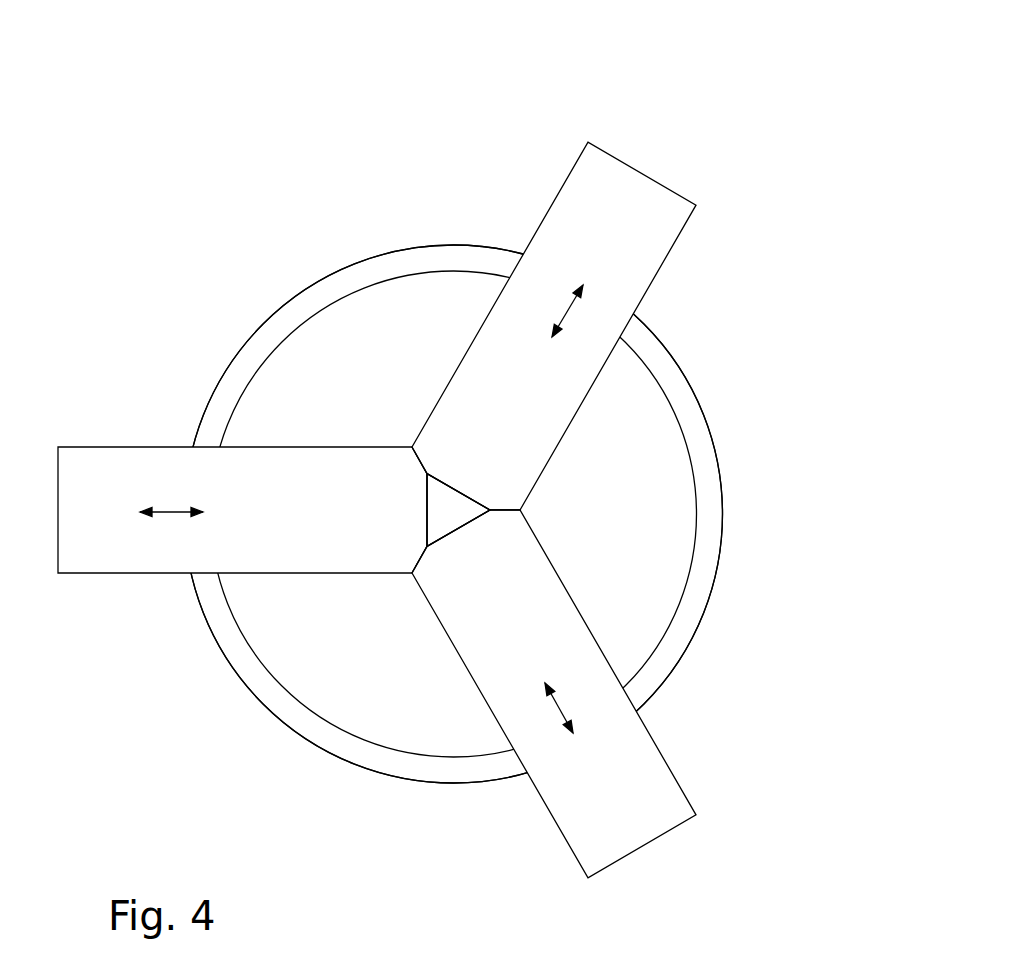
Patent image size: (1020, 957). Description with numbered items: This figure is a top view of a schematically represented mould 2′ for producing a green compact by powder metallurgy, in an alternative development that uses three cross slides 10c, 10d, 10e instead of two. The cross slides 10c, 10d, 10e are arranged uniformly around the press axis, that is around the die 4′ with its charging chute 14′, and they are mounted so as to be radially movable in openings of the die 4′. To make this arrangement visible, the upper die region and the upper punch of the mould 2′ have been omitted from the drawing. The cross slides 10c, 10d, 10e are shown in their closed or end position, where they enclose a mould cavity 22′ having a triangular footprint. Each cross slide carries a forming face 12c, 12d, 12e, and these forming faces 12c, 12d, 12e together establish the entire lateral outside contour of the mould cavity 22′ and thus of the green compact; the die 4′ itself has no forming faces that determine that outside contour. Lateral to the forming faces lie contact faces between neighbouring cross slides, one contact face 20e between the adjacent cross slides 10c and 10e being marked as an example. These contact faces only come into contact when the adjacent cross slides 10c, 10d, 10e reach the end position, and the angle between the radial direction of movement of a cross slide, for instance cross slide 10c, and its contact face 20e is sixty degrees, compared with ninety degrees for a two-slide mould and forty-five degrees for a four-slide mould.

The mould 2′ is at (683, 90).
The die 4′ is at (368, 325).
The cross slide 10c is at (92, 463).
The cross slide 10d is at (672, 212).
The cross slide 10e is at (570, 835).
The forming face 12c is at (427, 516).
The forming face 12d is at (465, 500).
The forming face 12e is at (447, 537).
The charging chute 14′ is at (449, 488).
The contact face 20e is at (410, 467).
The mould cavity 22′ is at (467, 513).